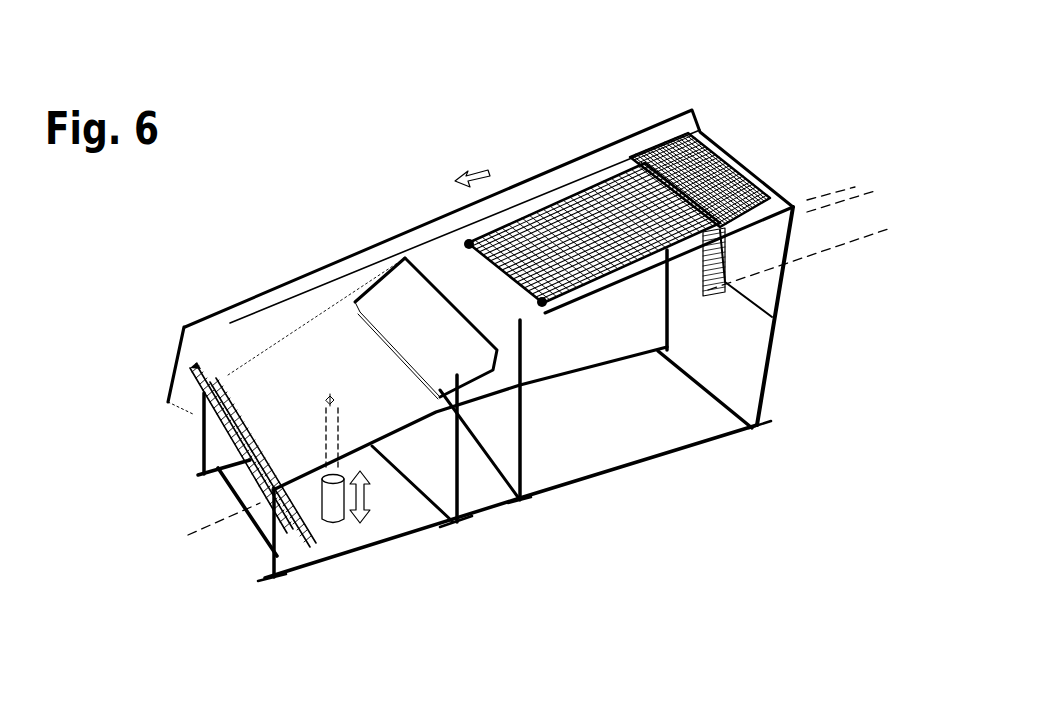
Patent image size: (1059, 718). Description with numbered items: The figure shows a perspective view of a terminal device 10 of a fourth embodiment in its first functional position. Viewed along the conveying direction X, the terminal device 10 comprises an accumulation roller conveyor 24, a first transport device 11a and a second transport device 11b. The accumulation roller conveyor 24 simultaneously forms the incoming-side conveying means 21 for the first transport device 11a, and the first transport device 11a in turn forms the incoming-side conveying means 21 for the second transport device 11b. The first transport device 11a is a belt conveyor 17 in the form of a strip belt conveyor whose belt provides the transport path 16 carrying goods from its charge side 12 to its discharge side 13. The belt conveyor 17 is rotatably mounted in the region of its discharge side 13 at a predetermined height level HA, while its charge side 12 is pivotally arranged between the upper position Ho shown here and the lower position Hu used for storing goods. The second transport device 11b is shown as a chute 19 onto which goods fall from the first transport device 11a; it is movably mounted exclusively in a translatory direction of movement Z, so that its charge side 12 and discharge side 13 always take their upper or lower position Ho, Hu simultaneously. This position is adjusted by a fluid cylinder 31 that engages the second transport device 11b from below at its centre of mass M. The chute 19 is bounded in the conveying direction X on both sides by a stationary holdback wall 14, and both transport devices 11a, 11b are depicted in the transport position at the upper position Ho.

The terminal device 10 is at (340, 124).
The first transport device 11a is at (543, 212).
The second transport device 11b is at (310, 378).
The charge side 12 is at (700, 285).
The discharge side 13 is at (252, 403).
The holdback wall 14 is at (372, 340).
The transport path 16 is at (389, 415).
The belt conveyor 17 is at (617, 190).
The chute 19 is at (253, 396).
The incoming-side conveying means 21 is at (628, 185).
The accumulation roller conveyor 24 is at (730, 162).
The fluid cylinder 31 is at (340, 522).
The centre of mass M is at (328, 401).
The conveying direction X is at (458, 175).
The translatory direction of movement Z is at (367, 497).
The upper position Ho is at (137, 496).
The height level HA is at (878, 189).
The lower position Hu is at (858, 238).